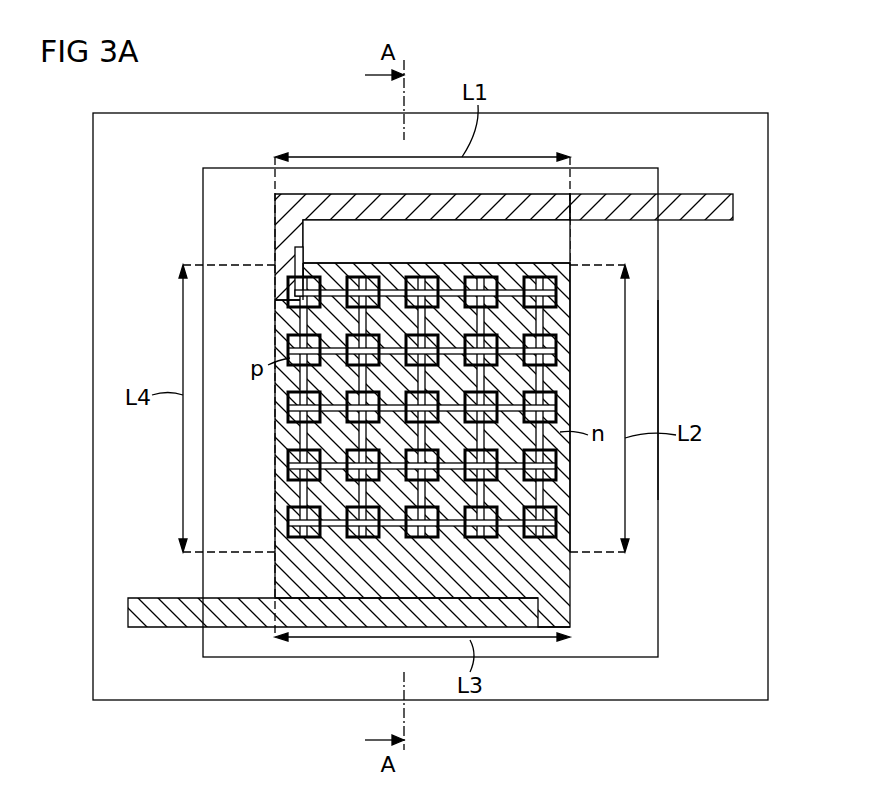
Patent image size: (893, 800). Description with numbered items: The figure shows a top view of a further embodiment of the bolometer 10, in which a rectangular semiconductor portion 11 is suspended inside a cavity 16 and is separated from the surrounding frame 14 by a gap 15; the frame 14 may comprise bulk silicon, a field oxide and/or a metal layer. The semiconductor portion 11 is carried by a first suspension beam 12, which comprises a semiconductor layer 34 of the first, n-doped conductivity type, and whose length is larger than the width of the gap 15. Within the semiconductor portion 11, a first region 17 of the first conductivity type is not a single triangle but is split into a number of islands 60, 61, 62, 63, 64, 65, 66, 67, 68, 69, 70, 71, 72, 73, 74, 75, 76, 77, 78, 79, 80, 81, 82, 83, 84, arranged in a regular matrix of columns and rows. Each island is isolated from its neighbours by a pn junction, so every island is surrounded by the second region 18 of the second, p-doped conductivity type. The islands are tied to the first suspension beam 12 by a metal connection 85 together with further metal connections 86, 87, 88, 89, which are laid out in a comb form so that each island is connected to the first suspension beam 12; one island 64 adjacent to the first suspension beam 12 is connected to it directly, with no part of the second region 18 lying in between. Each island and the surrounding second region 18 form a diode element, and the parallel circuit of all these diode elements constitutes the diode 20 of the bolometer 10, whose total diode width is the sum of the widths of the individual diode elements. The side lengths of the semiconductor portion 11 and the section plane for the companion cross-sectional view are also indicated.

The bolometer 10 is at (258, 98).
The semiconductor portion 11 is at (275, 320).
The first suspension beam 12 is at (440, 208).
The frame 14 is at (93, 345).
The gap 15 is at (203, 232).
The cavity 16 is at (648, 384).
The first region 17 is at (290, 515).
The second region 18 is at (563, 372).
The diode 20 is at (335, 270).
The semiconductor layer 34 is at (690, 210).
The island 60 is at (293, 523).
The island 61 is at (293, 462).
The island 62 is at (295, 402).
The island 63 is at (292, 345).
The island 64 is at (287, 284).
The island 65 is at (361, 522).
The island 66 is at (361, 462).
The island 67 is at (361, 404).
The island 68 is at (361, 347).
The island 69 is at (361, 289).
The island 70 is at (420, 522).
The island 71 is at (420, 462).
The island 72 is at (420, 404).
The island 73 is at (420, 347).
The island 74 is at (420, 289).
The island 75 is at (479, 522).
The island 76 is at (479, 462).
The island 77 is at (479, 404).
The island 78 is at (479, 347).
The island 79 is at (479, 289).
The island 80 is at (538, 522).
The island 81 is at (538, 462).
The island 82 is at (538, 404).
The island 83 is at (538, 347).
The island 84 is at (538, 289).
The metal connection 85 is at (295, 252).
The further metal connection 86 is at (362, 540).
The further metal connection 87 is at (421, 540).
The further metal connection 88 is at (480, 540).
The further metal connection 89 is at (550, 495).